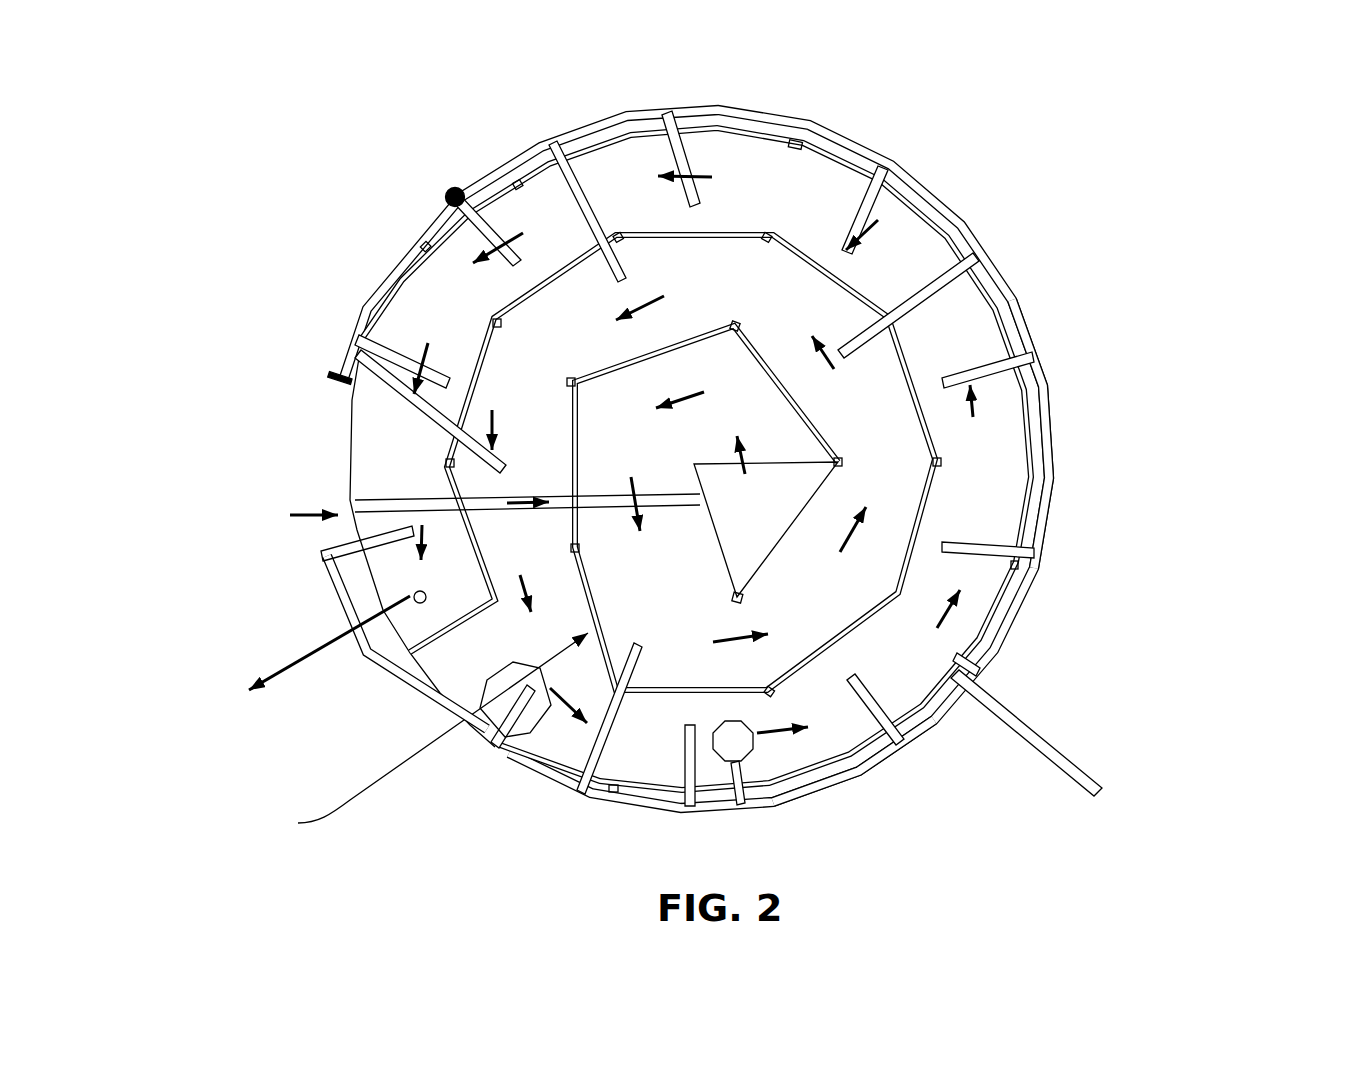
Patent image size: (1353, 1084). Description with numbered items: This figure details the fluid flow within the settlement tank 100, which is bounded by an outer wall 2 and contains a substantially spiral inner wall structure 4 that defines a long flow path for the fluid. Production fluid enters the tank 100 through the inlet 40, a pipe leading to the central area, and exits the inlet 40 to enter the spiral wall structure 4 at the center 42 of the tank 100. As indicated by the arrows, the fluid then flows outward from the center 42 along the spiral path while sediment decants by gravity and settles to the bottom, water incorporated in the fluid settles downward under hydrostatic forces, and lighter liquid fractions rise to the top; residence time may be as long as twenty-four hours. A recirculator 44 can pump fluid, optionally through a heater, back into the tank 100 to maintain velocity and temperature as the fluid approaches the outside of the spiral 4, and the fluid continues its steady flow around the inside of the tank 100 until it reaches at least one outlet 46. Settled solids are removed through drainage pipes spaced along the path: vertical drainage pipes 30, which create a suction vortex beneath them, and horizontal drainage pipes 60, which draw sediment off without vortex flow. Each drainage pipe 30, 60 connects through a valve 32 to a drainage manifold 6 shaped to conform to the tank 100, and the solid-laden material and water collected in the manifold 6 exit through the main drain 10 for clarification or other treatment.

The outer wall 2 is at (1030, 522).
The spiral inner wall structure 4 is at (738, 232).
The drainage manifold 6 is at (1060, 449).
The main drain 10 is at (1052, 750).
The drainage pipe 30 is at (422, 414).
The valve 32 is at (452, 197).
The inlet 40 is at (425, 520).
The center 42 is at (768, 530).
The recirculator 44 is at (740, 748).
The outlet 46 is at (412, 598).
The horizontal drainage pipe 60 is at (476, 238).
The settlement tank 100 is at (290, 333).